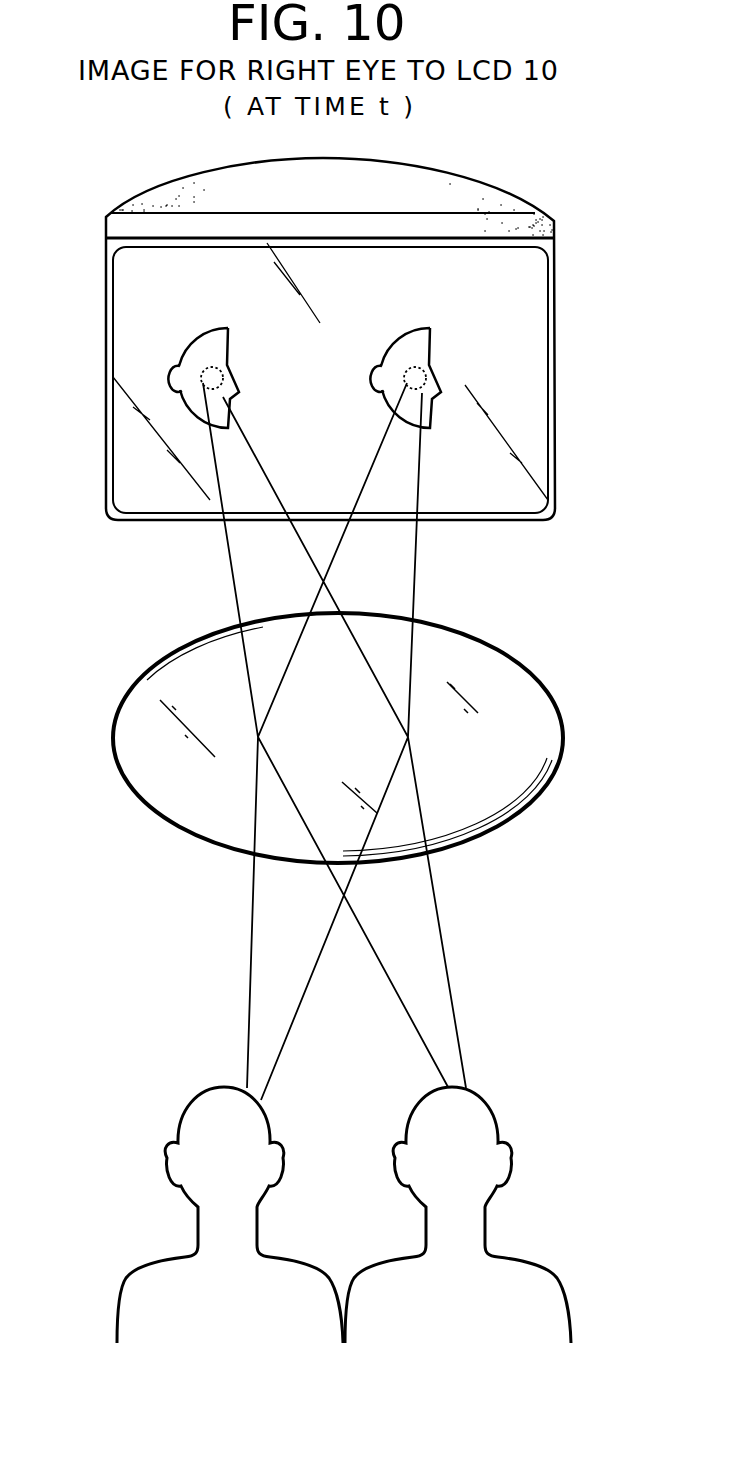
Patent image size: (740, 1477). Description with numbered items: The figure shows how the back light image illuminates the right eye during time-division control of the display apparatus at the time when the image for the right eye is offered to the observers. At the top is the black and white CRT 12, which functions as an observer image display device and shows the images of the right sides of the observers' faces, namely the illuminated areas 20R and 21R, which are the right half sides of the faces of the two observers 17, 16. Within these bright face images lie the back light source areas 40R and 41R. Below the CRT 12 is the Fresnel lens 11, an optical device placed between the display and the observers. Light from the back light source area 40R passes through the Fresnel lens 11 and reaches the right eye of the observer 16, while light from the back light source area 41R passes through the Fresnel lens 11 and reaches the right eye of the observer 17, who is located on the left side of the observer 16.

The black and white CRT 12 is at (533, 212).
The Fresnel lens 11 is at (512, 683).
The area 20R is at (215, 330).
The area 21R is at (422, 330).
The back light source area 40R is at (218, 364).
The back light source area 41R is at (421, 364).
The observer 17 is at (123, 1280).
The observer 16 is at (542, 1260).